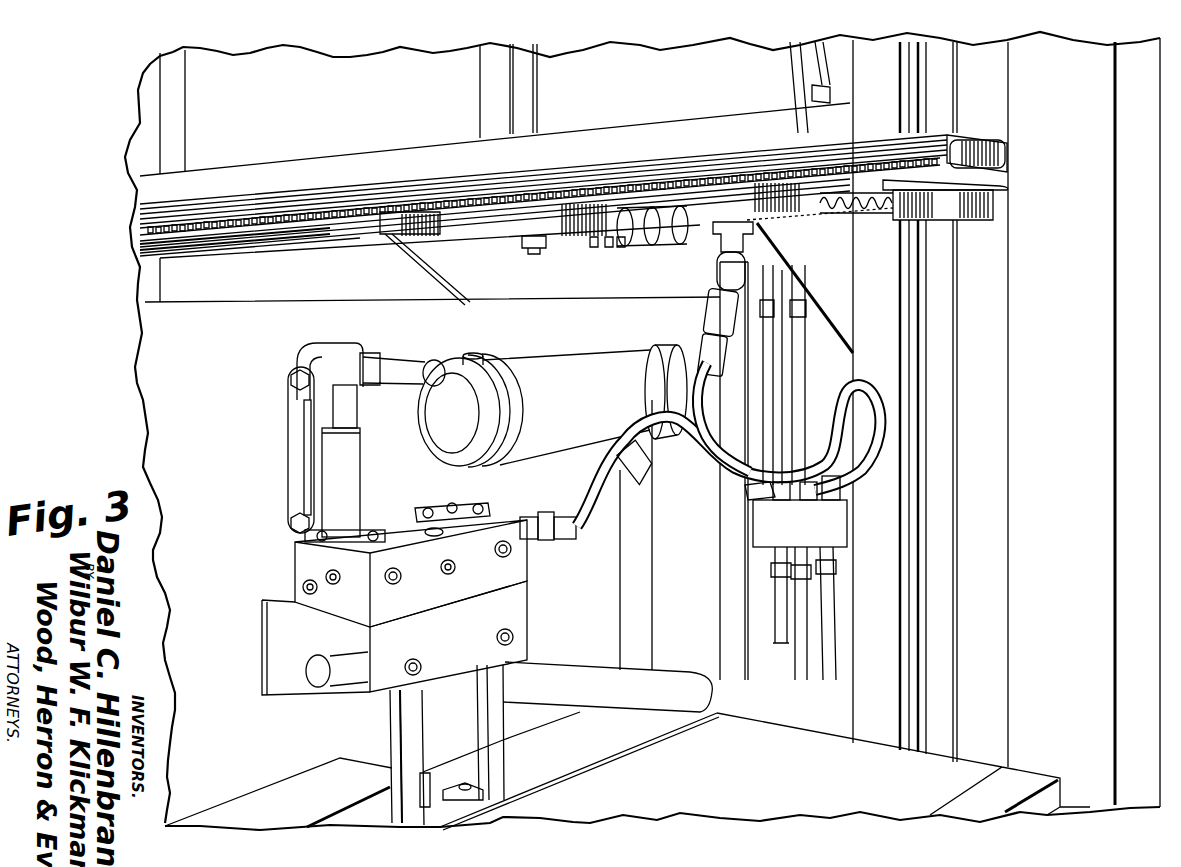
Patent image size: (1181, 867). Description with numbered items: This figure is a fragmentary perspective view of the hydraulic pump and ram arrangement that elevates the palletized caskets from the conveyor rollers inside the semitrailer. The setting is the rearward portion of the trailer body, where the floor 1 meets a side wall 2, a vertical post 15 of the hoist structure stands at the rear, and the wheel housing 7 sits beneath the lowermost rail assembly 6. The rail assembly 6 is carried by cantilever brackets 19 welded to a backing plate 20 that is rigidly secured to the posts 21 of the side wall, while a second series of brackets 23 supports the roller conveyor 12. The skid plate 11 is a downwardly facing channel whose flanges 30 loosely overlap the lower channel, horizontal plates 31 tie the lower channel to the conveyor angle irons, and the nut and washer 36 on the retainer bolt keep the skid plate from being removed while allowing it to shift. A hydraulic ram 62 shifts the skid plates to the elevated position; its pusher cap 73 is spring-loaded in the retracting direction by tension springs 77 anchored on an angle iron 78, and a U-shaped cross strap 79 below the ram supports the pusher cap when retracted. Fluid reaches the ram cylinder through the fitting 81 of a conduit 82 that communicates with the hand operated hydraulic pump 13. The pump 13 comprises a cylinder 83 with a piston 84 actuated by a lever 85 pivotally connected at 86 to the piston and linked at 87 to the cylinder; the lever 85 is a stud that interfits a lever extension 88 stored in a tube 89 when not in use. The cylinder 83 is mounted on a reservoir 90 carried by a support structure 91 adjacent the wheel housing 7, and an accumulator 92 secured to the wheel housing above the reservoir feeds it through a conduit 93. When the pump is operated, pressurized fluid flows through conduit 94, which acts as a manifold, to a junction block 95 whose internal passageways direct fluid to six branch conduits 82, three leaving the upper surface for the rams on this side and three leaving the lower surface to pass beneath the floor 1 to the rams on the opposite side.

The floor 1 is at (627, 771).
The side wall 2 is at (160, 69).
The rail assembly 6 is at (346, 181).
The wheel housing 7 is at (226, 313).
The skid plate 11 is at (574, 178).
The roller conveyor 12 is at (1123, 263).
The hydraulic pump 13 is at (340, 472).
The vertical post 15 is at (938, 391).
The bracket 19 is at (432, 269).
The backing plate 20 is at (283, 176).
The post 21 is at (488, 78).
The bracket 23 is at (835, 291).
The flange 30 is at (250, 211).
The horizontal plate 31 is at (300, 241).
The nut and washer 36 is at (522, 251).
The hydraulic ram 62 is at (704, 237).
The pusher cap 73 is at (686, 236).
The tension spring 77 is at (858, 223).
The angle iron 78 is at (977, 210).
The cross strap 79 is at (642, 249).
The fitting 81 is at (731, 263).
The conduit 82 is at (806, 61).
The cylinder 83 is at (345, 494).
The piston 84 is at (350, 424).
The lever 85 is at (418, 364).
The pivotal connection 86 is at (328, 348).
The link 87 is at (289, 417).
The lever extension 88 is at (342, 683).
The tube 89 is at (575, 673).
The reservoir 90 is at (300, 562).
The support structure 91 is at (278, 638).
The accumulator 92 is at (563, 373).
The conduit 93 is at (600, 536).
The conduit 94 is at (638, 433).
The junction block 95 is at (828, 523).